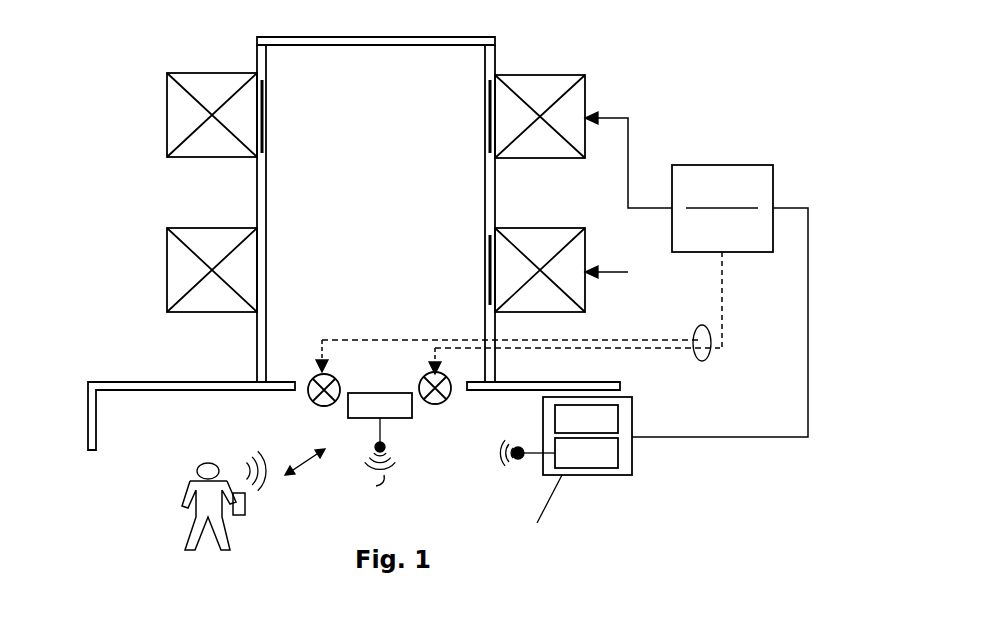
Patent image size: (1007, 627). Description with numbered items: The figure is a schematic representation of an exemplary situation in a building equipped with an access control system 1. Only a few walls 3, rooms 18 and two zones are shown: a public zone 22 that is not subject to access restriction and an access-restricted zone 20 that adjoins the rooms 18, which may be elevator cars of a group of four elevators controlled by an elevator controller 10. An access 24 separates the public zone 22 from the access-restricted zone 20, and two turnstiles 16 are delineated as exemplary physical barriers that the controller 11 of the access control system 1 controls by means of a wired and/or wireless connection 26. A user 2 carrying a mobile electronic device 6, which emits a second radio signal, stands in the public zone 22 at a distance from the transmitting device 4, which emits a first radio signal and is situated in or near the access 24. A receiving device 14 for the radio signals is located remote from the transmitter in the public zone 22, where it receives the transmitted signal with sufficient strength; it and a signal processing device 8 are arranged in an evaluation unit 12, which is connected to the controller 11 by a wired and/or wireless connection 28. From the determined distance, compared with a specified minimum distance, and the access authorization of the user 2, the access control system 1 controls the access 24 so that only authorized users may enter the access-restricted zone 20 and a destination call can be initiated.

The access control system 1 is at (684, 476).
The user 2 is at (201, 466).
The wall 3 is at (97, 398).
The transmitting device 4 is at (395, 418).
The mobile electronic device 6 is at (245, 512).
The signal processing device 8 is at (618, 420).
The elevator controller 10 is at (695, 180).
The controller 11 is at (738, 242).
The evaluation unit 12 is at (577, 475).
The receiving device 14 is at (618, 455).
The turnstile 16 is at (310, 401).
The room 18 is at (167, 120).
The access-restricted zone 20 is at (392, 229).
The public zone 22 is at (455, 504).
The access 24 is at (313, 365).
The connection 26 is at (704, 359).
The connection 28 is at (755, 440).